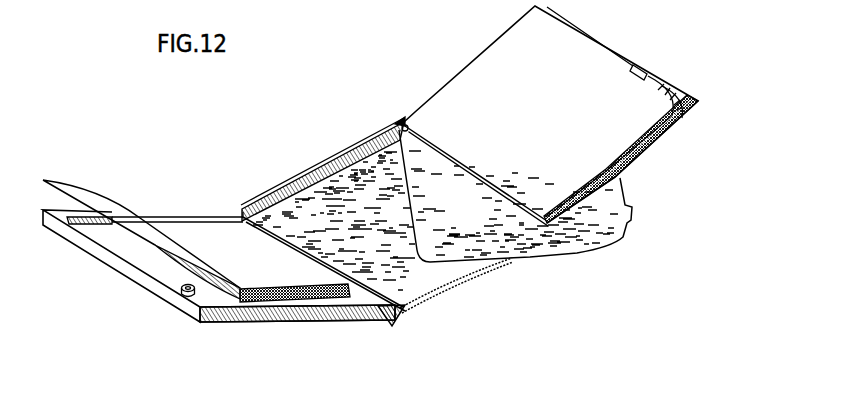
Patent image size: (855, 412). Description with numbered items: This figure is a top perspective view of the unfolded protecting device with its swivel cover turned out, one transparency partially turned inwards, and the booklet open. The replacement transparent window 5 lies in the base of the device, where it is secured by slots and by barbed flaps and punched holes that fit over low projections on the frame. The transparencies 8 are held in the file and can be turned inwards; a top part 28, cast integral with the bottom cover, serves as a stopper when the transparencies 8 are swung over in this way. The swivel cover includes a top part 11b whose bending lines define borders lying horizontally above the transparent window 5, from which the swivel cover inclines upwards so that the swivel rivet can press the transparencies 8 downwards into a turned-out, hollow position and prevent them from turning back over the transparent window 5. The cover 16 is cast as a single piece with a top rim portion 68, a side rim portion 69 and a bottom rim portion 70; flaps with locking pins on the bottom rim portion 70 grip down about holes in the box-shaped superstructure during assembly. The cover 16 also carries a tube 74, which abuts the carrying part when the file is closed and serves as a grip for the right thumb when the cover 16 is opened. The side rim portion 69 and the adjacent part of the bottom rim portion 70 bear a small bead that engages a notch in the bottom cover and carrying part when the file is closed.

The transparent window 5 is at (417, 283).
The transparencies 8 is at (673, 98).
The top part 11b is at (440, 106).
The cover 16 is at (217, 296).
The top part 28 is at (258, 204).
The top rim portion 68 is at (165, 214).
The side rim portion 69 is at (88, 247).
The bottom rim portion 70 is at (301, 309).
The tube 74 is at (183, 283).